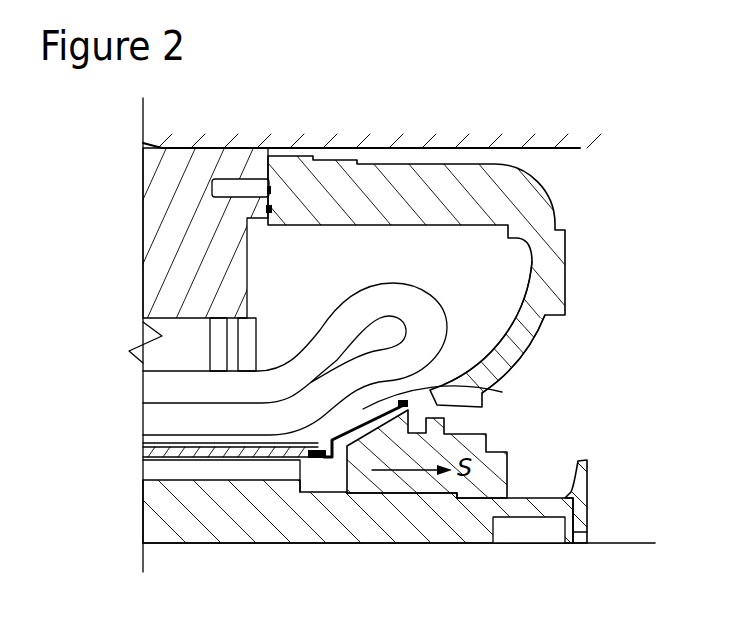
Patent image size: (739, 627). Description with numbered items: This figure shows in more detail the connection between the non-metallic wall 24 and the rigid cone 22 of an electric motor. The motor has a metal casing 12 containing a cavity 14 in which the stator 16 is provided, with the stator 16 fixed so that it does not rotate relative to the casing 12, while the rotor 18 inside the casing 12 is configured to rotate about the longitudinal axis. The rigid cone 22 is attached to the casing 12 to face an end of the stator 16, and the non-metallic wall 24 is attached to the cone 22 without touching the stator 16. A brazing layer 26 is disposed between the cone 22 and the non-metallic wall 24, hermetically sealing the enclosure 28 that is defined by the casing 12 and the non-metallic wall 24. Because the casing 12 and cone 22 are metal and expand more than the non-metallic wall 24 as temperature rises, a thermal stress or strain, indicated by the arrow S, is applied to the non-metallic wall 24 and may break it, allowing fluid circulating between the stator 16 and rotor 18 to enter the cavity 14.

The casing 12 is at (556, 257).
The cavity 14 is at (508, 274).
The stator 16 is at (155, 422).
The rotor 18 is at (197, 526).
The rigid cone 22 is at (502, 392).
The non-metallic wall 24 is at (238, 441).
The brazing layer 26 is at (318, 450).
The enclosure 28 is at (267, 258).